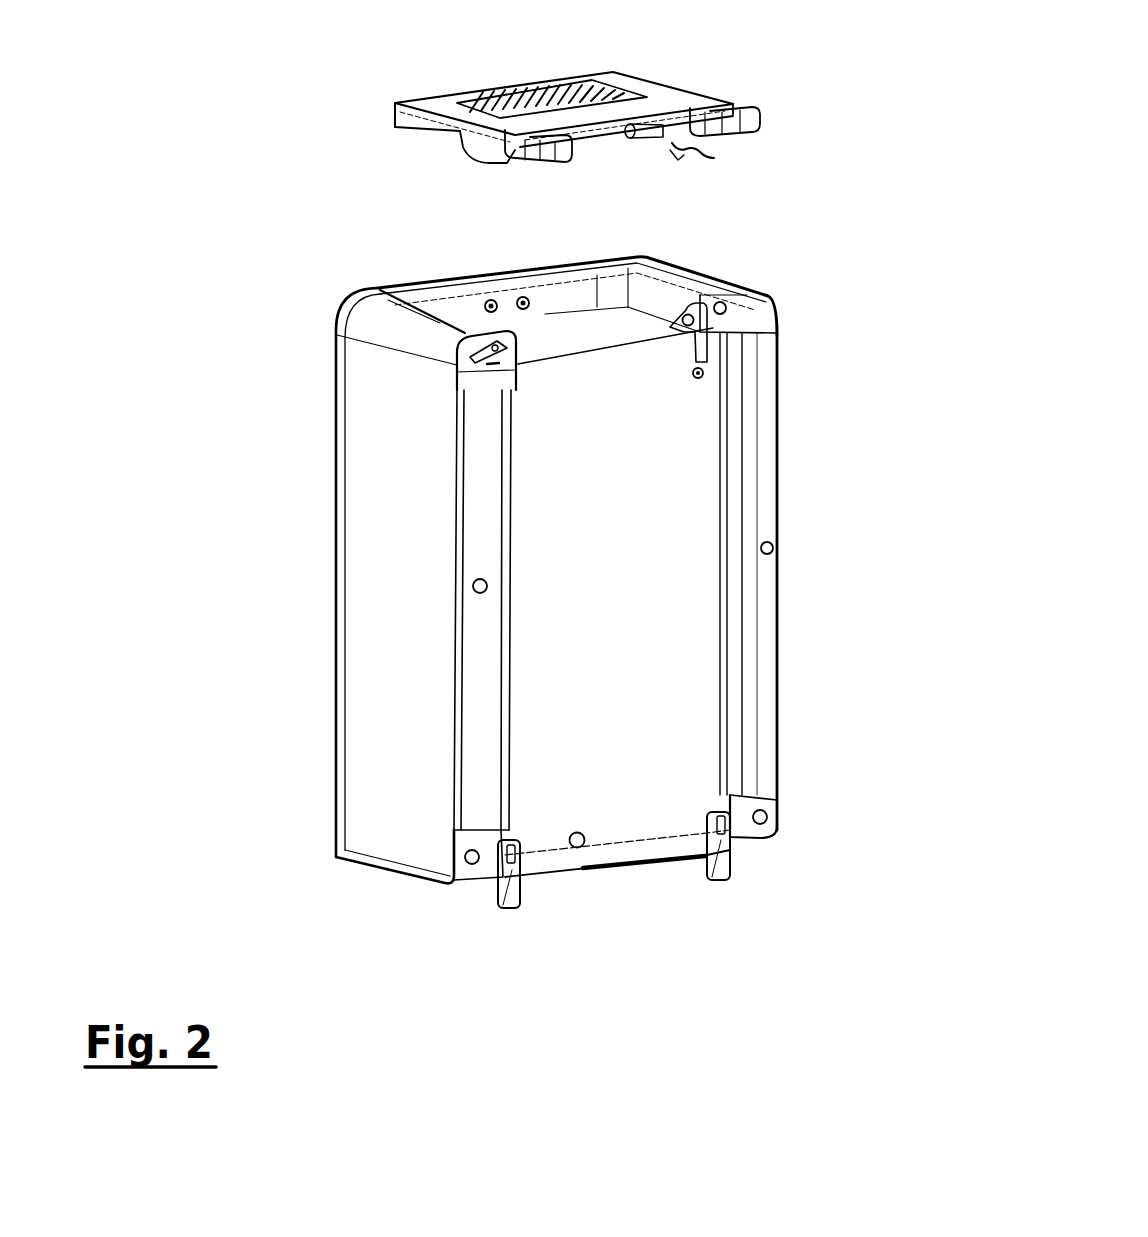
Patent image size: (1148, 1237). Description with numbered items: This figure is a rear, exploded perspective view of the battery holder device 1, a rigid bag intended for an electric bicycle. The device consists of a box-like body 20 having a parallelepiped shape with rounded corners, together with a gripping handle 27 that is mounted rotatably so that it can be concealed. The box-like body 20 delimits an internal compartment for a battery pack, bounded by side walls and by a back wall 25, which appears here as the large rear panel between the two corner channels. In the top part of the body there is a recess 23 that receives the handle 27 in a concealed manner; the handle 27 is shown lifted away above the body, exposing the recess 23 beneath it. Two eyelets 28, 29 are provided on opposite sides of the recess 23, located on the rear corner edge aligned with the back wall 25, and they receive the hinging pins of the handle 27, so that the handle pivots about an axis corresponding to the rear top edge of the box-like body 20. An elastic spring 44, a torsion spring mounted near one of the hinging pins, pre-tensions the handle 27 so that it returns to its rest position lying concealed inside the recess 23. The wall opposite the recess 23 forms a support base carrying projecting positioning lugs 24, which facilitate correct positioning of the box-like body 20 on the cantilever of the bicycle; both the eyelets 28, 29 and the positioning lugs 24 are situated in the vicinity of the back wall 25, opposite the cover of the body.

The battery holder device 1 is at (293, 404).
The box-like body 20 is at (383, 638).
The recess 23 is at (615, 325).
The positioning lugs 24 is at (513, 892).
The back wall 25 is at (634, 624).
The gripping handle 27 is at (675, 98).
The eyelet 28 is at (510, 355).
The eyelet 29 is at (712, 323).
The elastic spring 44 is at (628, 138).